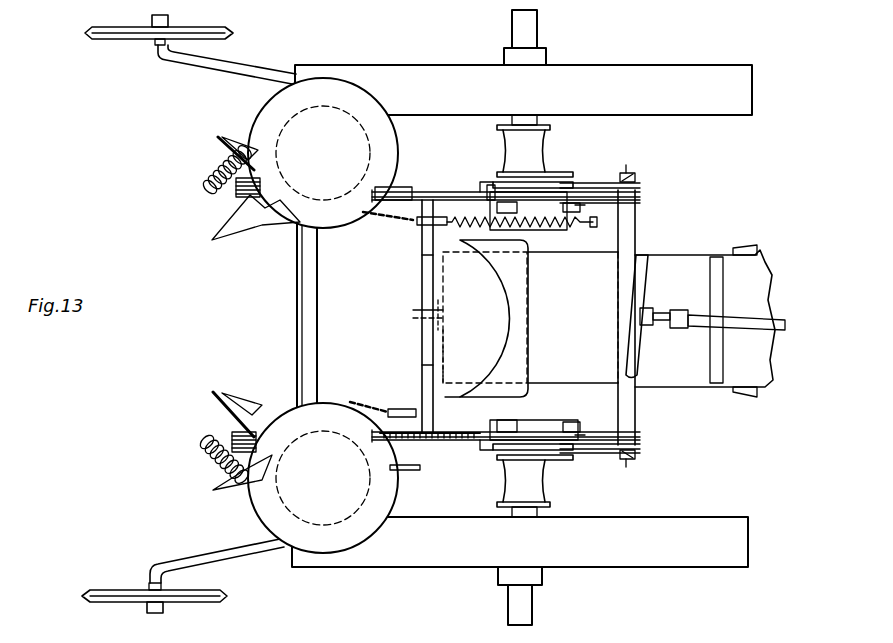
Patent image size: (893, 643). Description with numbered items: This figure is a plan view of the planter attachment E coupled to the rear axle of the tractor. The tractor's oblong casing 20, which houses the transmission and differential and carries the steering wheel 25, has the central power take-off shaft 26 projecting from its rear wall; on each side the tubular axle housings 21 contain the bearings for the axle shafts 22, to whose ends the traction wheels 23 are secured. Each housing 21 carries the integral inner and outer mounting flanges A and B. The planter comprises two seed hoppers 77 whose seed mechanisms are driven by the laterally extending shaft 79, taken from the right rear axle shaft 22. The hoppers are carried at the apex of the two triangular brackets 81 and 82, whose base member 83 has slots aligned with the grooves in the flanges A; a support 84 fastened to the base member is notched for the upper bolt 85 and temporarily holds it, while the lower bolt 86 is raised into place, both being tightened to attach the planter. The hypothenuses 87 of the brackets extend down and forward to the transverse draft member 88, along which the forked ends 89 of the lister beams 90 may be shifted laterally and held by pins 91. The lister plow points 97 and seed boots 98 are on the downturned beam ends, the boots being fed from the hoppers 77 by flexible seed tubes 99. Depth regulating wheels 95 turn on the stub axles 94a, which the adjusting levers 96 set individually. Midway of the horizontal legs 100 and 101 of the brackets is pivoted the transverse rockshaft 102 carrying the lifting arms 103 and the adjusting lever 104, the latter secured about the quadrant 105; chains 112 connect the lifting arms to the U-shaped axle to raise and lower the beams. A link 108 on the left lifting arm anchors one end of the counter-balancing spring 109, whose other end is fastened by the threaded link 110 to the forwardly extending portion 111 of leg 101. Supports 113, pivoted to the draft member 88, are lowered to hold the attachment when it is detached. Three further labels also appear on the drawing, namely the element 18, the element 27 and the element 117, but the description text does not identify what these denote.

The frame side bar 18 is at (312, 330).
The oblong casing 20 is at (693, 380).
The tubular axle housing 21 is at (540, 160).
The axle shaft 22 is at (525, 600).
The traction wheel 23 is at (690, 108).
The steering wheel 25 is at (640, 260).
The power take-off shaft 26 is at (422, 340).
The seat bracket 27 is at (437, 275).
The seed hopper 77 is at (280, 101).
The laterally extending shaft 79 is at (297, 308).
The triangular bracket 81 is at (450, 432).
The triangular bracket 82 is at (487, 195).
The base member 83 is at (497, 205).
The support 84 is at (503, 193).
The upper bolt 85 is at (500, 230).
The lower bolt 86 is at (636, 222).
The hypothenuse 87 is at (640, 200).
The transverse draft member 88 is at (637, 457).
The forked end 89 is at (640, 185).
The lister beam 90 is at (578, 205).
The pin 91 is at (632, 180).
The stub axle 94a is at (222, 68).
The depth regulating wheel 95 is at (150, 38).
The adjusting lever 96 is at (392, 190).
The lister plow point 97 is at (252, 148).
The seed boot 98 is at (222, 195).
The flexible seed tube 99 is at (230, 170).
The horizontal leg 100 is at (450, 397).
The horizontal leg 101 is at (386, 193).
The transverse rockshaft 102 is at (430, 365).
The lifting arm 103 is at (425, 235).
The adjusting lever 104 is at (455, 382).
The quadrant 105 is at (410, 467).
The link 108 is at (432, 258).
The counter-balancing spring 109 is at (445, 250).
The threaded link 110 is at (600, 252).
The forwardly extending portion 111 is at (580, 228).
The chain 112 is at (392, 215).
The support 113 is at (633, 175).
The stepped bracket 117 is at (490, 183).
The inner flange A is at (580, 178).
The outer flange B is at (545, 172).
The planter attachment E is at (320, 293).